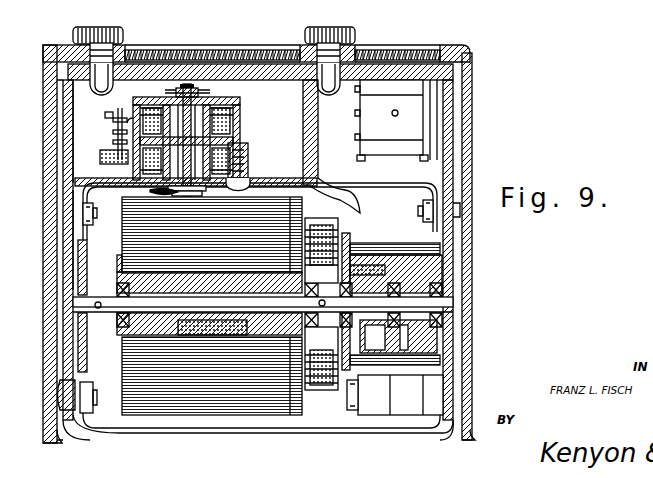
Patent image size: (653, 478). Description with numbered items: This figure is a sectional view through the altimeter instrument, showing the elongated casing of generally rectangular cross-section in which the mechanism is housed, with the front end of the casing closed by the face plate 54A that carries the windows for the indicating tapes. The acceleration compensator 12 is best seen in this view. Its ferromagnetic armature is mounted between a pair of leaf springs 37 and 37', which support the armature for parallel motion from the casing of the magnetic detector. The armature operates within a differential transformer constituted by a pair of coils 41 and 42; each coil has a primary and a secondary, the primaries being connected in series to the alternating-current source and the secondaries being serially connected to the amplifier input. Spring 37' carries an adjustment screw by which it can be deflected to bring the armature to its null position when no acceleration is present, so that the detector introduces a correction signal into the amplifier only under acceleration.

The leaf spring 37' is at (203, 57).
The acceleration compensator 12 is at (240, 109).
The coil 41 is at (230, 121).
The coil 42 is at (247, 149).
The leaf spring 37 is at (192, 232).
The face plate 54A is at (529, 6).